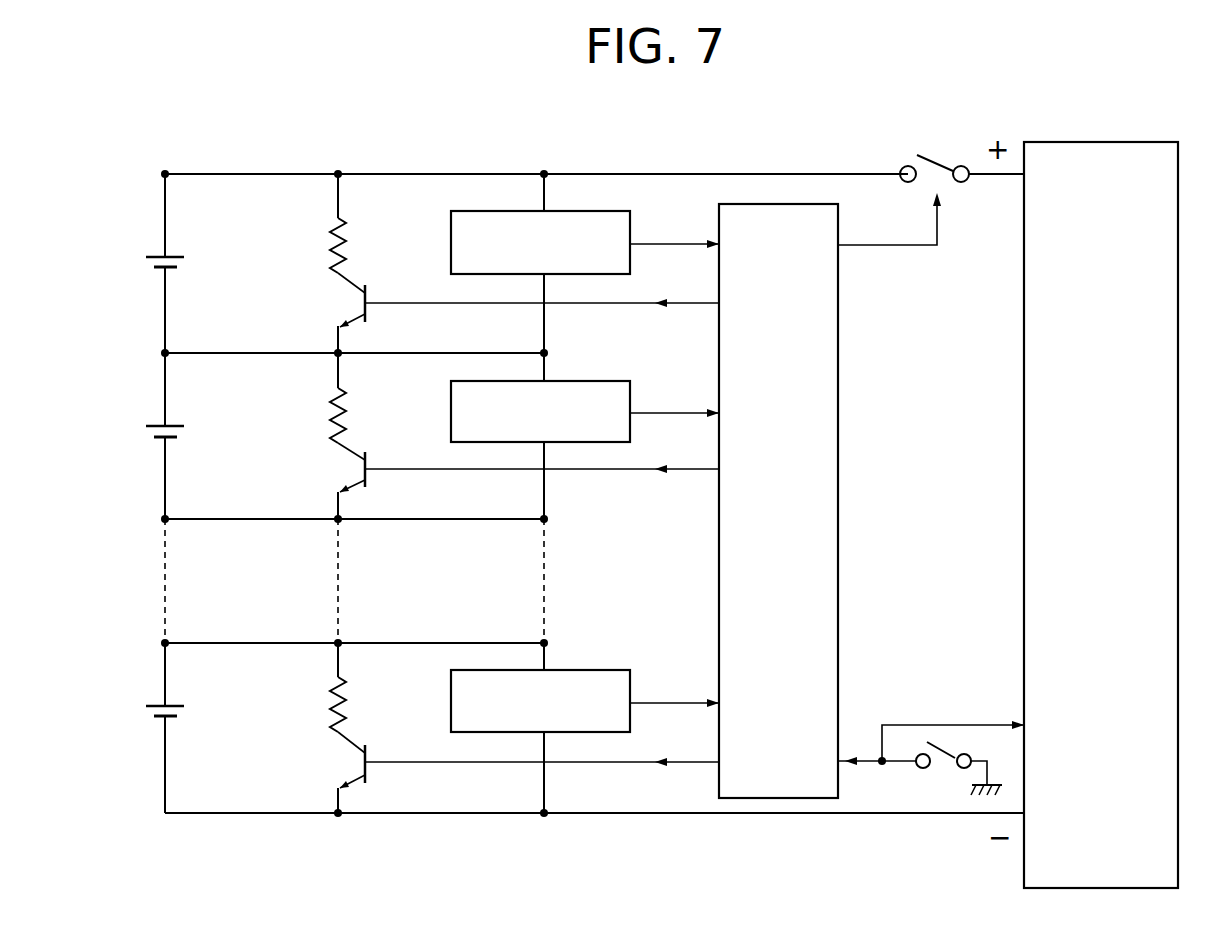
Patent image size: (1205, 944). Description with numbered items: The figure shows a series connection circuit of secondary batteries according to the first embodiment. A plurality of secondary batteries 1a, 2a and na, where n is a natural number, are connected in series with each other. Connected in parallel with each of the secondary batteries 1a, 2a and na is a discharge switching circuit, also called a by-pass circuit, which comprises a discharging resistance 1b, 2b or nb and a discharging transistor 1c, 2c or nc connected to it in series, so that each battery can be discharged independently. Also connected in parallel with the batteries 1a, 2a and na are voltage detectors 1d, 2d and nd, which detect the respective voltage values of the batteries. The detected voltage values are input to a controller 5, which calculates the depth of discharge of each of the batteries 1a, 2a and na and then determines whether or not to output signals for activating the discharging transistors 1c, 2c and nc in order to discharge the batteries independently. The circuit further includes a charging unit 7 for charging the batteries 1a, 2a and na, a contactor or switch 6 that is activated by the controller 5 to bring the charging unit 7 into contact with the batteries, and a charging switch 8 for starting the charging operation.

The secondary battery 1a is at (142, 262).
The discharging resistance 1b is at (328, 248).
The discharging transistor 1c is at (326, 308).
The voltage detector 1d is at (450, 242).
The secondary battery 2a is at (142, 429).
The discharging resistance 2b is at (328, 413).
The discharging transistor 2c is at (326, 473).
The voltage detector 2d is at (450, 410).
The secondary battery na is at (138, 709).
The discharging resistance nb is at (322, 702).
The discharging transistor nc is at (322, 764).
The voltage detector nd is at (448, 700).
The controller 5 is at (842, 448).
The contactor (switch) 6 is at (943, 160).
The charging unit 7 is at (1024, 583).
The charging switch 8 is at (948, 772).